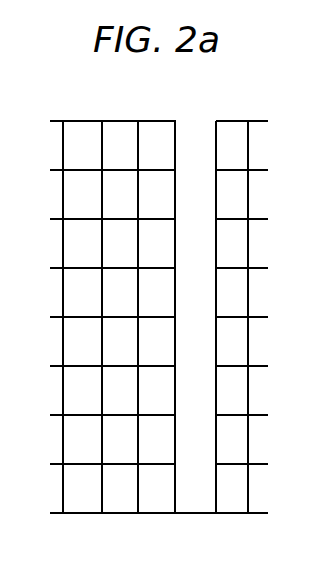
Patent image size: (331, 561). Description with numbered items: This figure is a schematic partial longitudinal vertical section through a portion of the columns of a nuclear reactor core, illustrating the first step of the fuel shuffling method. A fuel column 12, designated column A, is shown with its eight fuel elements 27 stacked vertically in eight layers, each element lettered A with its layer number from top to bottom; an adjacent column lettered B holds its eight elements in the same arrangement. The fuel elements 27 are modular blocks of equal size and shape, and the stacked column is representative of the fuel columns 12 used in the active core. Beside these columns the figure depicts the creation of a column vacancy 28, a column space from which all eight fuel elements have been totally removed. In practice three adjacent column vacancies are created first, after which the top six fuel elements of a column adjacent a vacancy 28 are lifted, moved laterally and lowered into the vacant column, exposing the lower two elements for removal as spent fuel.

The fuel column 12 is at (152, 121).
The column vacancy 28 is at (192, 128).
The fuel element 27 is at (107, 162).